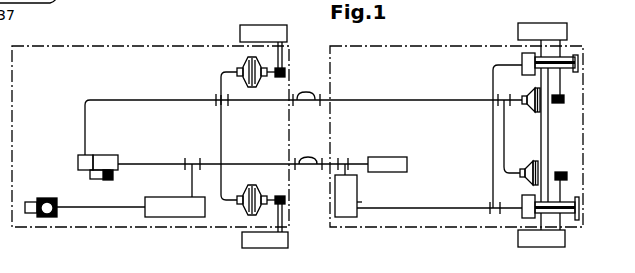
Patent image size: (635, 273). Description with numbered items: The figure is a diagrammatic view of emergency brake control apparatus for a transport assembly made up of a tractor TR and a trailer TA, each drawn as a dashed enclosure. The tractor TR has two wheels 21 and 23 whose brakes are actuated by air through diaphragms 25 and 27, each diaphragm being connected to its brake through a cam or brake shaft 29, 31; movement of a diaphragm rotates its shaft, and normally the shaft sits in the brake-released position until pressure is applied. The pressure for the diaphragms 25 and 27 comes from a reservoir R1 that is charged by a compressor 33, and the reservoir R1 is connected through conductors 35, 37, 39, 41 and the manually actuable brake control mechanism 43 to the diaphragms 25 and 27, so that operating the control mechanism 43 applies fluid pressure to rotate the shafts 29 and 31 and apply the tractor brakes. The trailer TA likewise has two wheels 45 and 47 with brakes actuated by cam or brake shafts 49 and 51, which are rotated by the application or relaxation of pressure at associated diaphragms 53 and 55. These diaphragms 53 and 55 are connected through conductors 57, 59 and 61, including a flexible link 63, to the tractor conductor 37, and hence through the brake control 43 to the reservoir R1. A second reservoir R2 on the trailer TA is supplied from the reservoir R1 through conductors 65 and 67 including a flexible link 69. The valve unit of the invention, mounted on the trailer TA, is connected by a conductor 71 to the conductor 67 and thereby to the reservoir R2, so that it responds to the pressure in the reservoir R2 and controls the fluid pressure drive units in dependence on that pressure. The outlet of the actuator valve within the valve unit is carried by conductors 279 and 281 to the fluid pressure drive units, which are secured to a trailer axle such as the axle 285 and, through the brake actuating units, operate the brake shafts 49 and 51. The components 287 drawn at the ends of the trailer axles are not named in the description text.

The wheel 21 is at (259, 26).
The wheel 23 is at (288, 245).
The diaphragm 25 is at (247, 57).
The diaphragm 27 is at (252, 186).
The brake shaft 29 is at (283, 50).
The brake shaft 31 is at (283, 224).
The compressor 33 is at (52, 200).
The conductor 35 is at (158, 165).
The conductor 37 is at (119, 100).
The conductor 39 is at (220, 84).
The conductor 41 is at (223, 158).
The manually actuable brake control mechanism 43 is at (105, 157).
The wheel 45 is at (556, 25).
The wheel 47 is at (565, 241).
The brake shaft 49 is at (563, 95).
The brake shaft 51 is at (562, 184).
The diaphragm 53 is at (528, 94).
The diaphragm 55 is at (533, 163).
The conductor 57 is at (410, 100).
The conductor 59 is at (514, 113).
The conductor 61 is at (510, 135).
The flexible link 63 is at (310, 88).
The conductor 65 is at (253, 160).
The conductor 67 is at (354, 164).
The flexible link 69 is at (310, 154).
The conductor 71 is at (353, 173).
The conductor 279 is at (494, 177).
The conductor 281 is at (507, 203).
The axle 285 is at (548, 150).
The trailer axle brake unit 287 is at (521, 58).
The reservoir R1 is at (183, 197).
The reservoir R2 is at (382, 157).
The tractor TR is at (147, 49).
The trailer TA is at (432, 47).